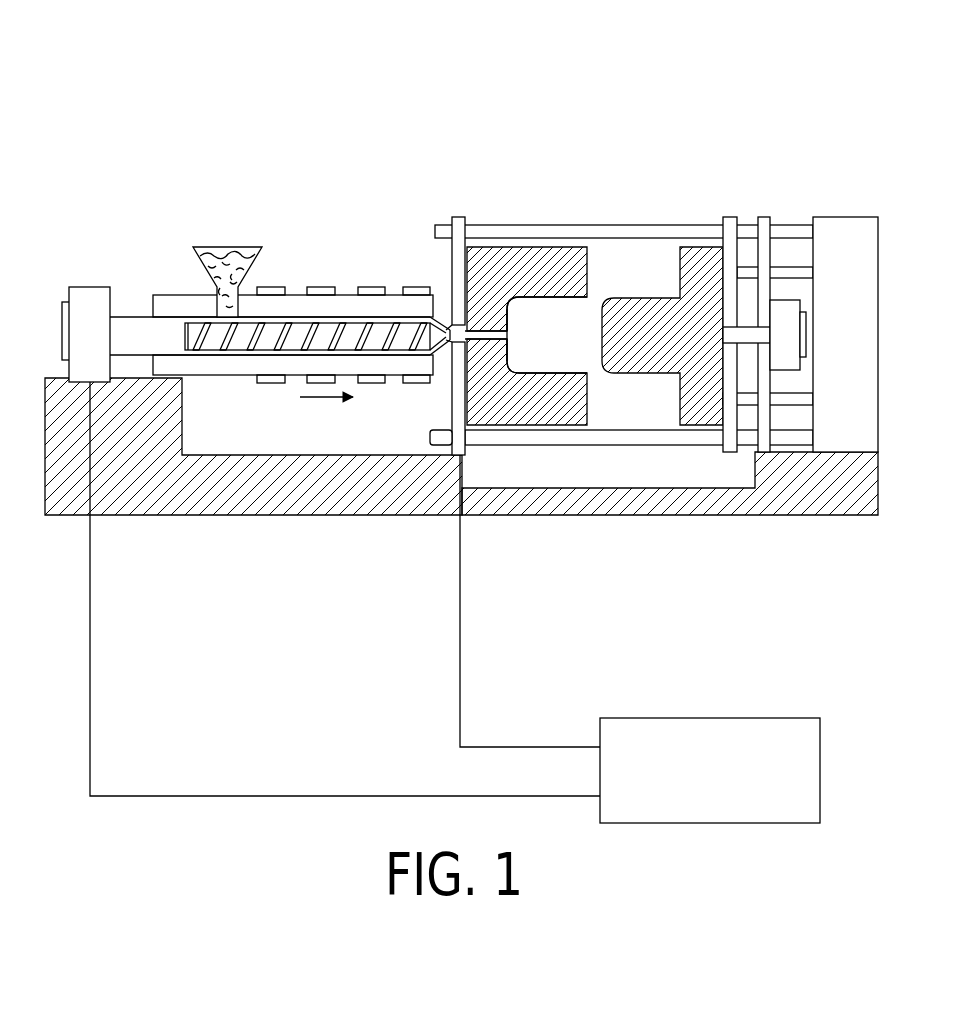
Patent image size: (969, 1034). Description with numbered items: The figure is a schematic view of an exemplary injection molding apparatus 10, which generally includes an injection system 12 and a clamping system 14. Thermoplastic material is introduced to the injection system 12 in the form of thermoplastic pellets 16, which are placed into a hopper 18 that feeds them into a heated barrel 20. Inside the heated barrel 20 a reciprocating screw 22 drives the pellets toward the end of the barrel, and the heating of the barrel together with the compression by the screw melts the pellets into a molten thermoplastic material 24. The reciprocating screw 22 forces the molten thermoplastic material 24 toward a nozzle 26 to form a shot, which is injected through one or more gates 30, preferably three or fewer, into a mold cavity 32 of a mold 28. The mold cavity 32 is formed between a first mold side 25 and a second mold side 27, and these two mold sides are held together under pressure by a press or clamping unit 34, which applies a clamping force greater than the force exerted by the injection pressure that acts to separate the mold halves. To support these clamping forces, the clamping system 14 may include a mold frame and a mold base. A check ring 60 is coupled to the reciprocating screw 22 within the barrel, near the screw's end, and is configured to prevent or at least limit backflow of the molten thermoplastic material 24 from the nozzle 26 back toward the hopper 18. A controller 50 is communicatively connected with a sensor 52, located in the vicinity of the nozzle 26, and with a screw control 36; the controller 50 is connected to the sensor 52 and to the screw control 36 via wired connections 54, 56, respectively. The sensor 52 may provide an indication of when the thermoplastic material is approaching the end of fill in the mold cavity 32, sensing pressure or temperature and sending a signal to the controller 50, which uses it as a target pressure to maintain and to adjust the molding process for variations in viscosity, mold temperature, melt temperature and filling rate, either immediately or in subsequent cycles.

The injection molding apparatus 10 is at (430, 122).
The injection system 12 is at (277, 428).
The clamping system 14 is at (612, 522).
The thermoplastic pellets 16 is at (215, 272).
The hopper 18 is at (236, 247).
The heated barrel 20 is at (345, 292).
The reciprocating screw 22 is at (238, 340).
The molten thermoplastic material 24 is at (400, 317).
The first mold side 25 is at (526, 418).
The nozzle 26 is at (467, 300).
The second mold side 27 is at (660, 357).
The mold 28 is at (594, 228).
The gate 30 is at (492, 310).
The mold cavity 32 is at (551, 308).
The clamping unit 34 is at (817, 213).
The screw control 36 is at (90, 287).
The controller 50 is at (703, 717).
The sensor 52 is at (453, 342).
The wired connection 54 is at (530, 745).
The wired connection 56 is at (335, 794).
The check ring 60 is at (458, 328).